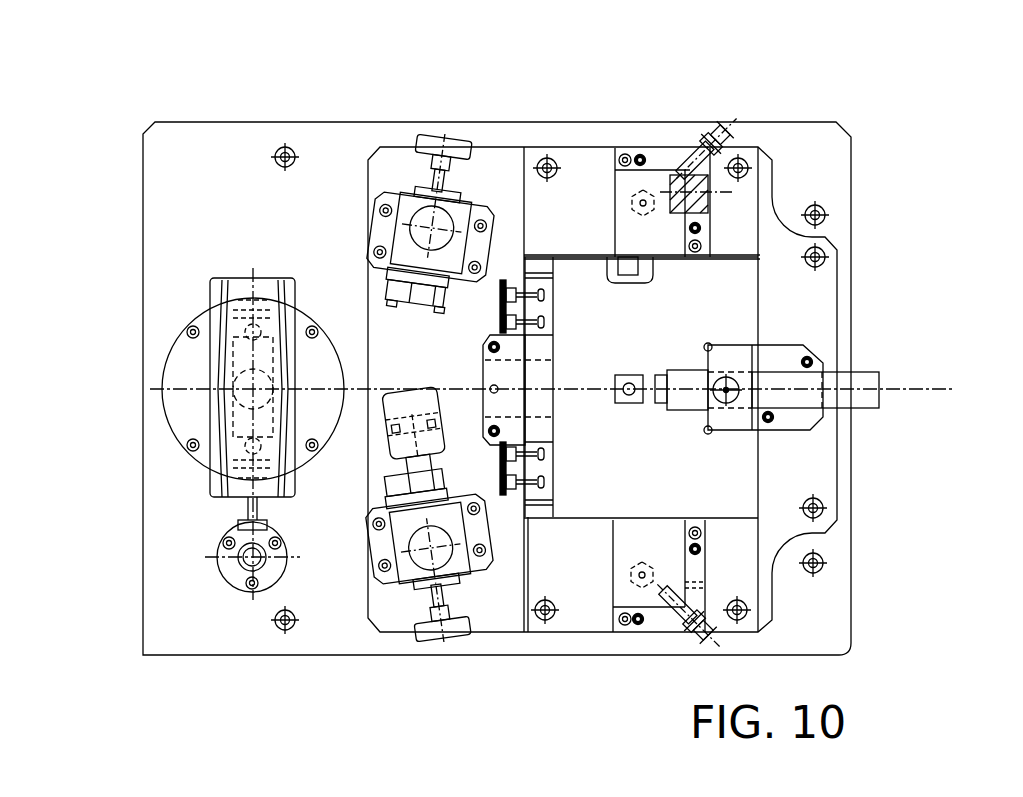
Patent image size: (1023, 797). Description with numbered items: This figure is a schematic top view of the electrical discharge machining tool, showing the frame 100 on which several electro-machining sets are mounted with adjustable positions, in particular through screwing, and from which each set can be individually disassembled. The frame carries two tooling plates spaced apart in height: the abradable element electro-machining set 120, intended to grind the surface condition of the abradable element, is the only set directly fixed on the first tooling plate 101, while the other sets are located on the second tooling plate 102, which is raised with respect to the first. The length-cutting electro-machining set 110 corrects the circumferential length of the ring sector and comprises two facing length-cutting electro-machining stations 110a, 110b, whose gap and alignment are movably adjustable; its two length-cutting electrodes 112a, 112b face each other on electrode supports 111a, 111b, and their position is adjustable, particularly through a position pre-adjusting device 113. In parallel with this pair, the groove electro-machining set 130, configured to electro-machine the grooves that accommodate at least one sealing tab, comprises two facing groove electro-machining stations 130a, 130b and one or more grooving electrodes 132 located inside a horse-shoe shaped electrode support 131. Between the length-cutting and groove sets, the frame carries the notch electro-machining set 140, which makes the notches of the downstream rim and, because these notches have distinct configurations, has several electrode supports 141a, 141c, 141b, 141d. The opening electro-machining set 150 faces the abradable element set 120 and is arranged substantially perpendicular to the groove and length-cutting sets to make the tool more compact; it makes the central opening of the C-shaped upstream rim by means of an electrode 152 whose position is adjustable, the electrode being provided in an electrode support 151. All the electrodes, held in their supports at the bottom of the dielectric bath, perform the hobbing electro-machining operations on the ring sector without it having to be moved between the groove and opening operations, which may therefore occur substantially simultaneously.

The frame 100 is at (207, 182).
The first tooling plate 101 is at (188, 220).
The second tooling plate 102 is at (508, 172).
The length-cutting electro-machining set 110 is at (383, 192).
The length-cutting electro-machining station 110a is at (387, 192).
The length-cutting electro-machining station 110b is at (390, 492).
The electrode support 111a is at (415, 488).
The electrode support 111b is at (416, 287).
The length-cutting electrode 112a is at (413, 475).
The length-cutting electrode 112b is at (415, 296).
The position pre-adjusting device 113 is at (414, 423).
The abradable element electro-machining set 120 is at (165, 343).
The groove electro-machining set 130 is at (652, 378).
The groove electro-machining station 130a is at (627, 197).
The groove electro-machining station 130b is at (658, 613).
The electrode support 131 is at (735, 257).
The grooving electrode 132 is at (628, 266).
The notch electro-machining set 140 is at (570, 479).
The electrode support 141a is at (547, 294).
The electrode support 141b is at (547, 481).
The electrode support 141c is at (547, 322).
The electrode support 141d is at (547, 454).
The opening electro-machining set 150 is at (817, 390).
The electrode support 151 is at (740, 418).
The electrode 152 is at (677, 380).